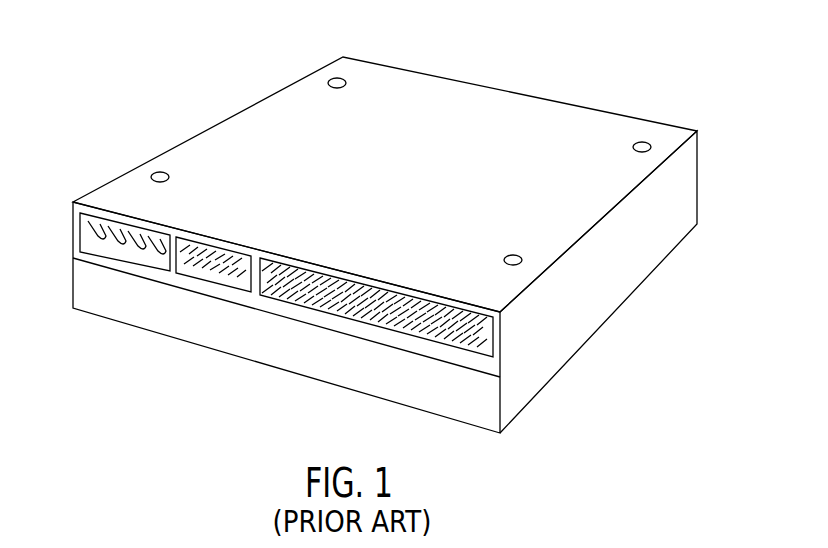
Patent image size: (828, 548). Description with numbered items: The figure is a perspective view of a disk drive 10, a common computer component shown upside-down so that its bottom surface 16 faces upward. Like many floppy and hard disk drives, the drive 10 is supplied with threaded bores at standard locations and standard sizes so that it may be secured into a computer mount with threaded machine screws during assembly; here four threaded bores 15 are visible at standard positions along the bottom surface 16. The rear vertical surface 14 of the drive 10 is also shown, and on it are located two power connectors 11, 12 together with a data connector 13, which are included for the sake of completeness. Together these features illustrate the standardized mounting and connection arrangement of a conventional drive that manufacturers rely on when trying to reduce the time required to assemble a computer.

The disk drive 10 is at (468, 116).
The power connector 11 is at (150, 261).
The power connector 12 is at (233, 283).
The data connector 13 is at (318, 310).
The rear vertical surface 14 is at (430, 400).
The threaded bores 15 is at (160, 172).
The bottom surface 16 is at (385, 192).